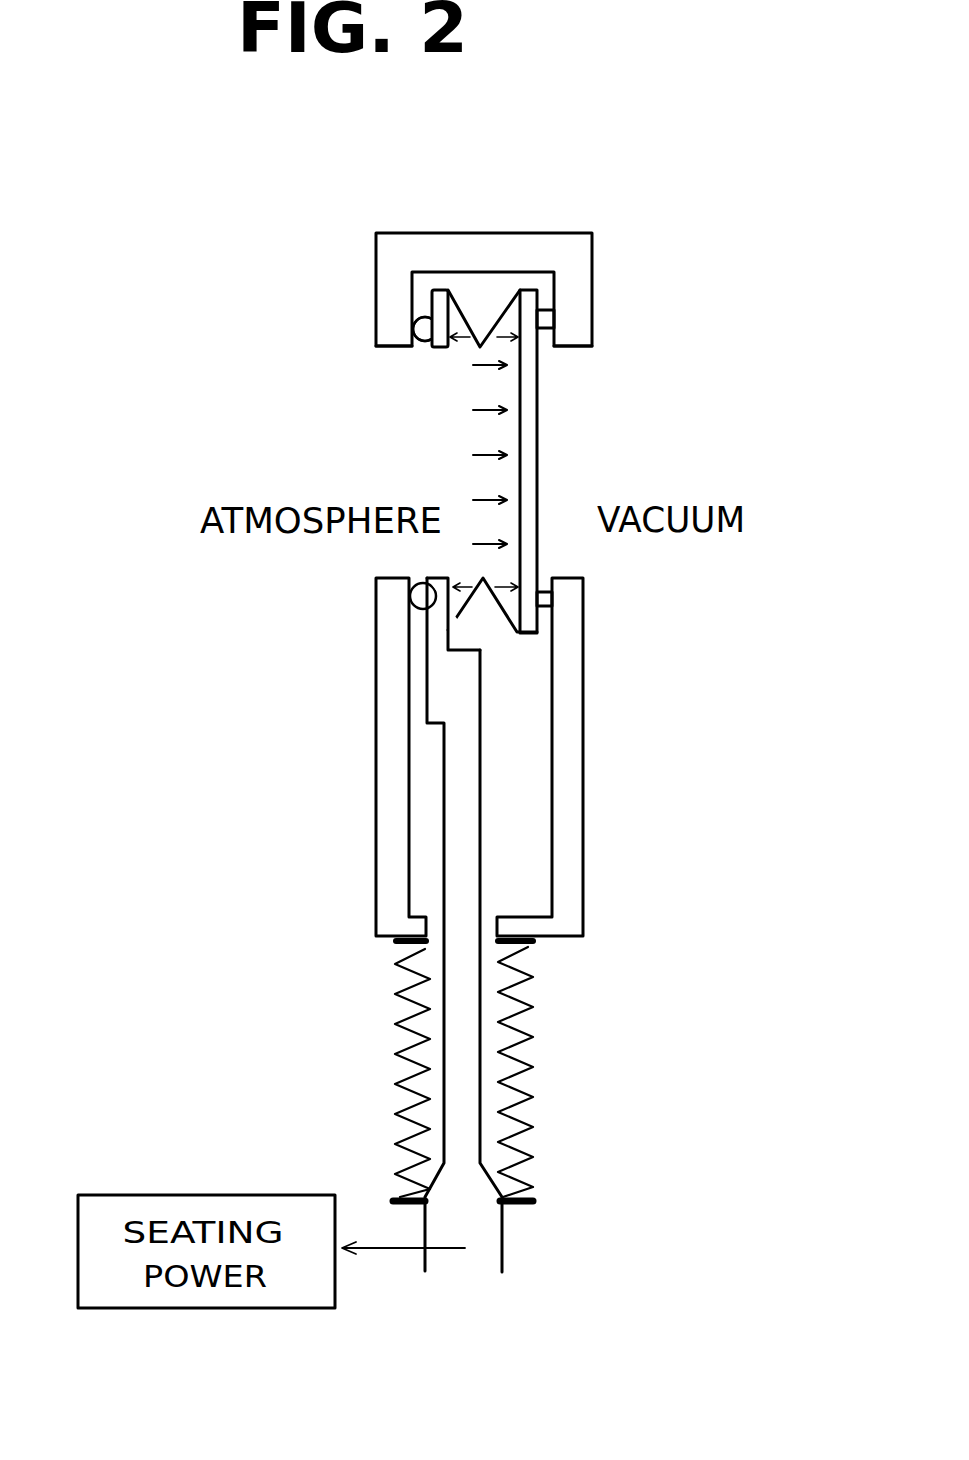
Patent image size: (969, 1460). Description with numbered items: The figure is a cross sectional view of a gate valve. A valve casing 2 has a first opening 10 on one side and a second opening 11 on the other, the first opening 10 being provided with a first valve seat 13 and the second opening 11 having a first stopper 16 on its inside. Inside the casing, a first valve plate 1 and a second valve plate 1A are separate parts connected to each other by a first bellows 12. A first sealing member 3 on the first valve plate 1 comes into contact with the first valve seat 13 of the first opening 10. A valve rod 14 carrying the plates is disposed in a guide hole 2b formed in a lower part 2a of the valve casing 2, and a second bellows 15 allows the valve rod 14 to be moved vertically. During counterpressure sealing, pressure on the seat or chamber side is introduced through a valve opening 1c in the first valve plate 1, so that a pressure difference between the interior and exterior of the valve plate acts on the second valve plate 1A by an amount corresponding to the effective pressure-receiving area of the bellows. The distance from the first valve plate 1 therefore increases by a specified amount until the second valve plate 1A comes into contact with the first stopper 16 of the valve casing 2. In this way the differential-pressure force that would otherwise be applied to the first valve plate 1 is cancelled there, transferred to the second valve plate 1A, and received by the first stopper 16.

The first valve plate 1 is at (437, 348).
The second valve plate 1A is at (528, 460).
The valve opening 1c is at (433, 580).
The valve casing 2 is at (572, 262).
The lower part of the valve casing 2a is at (550, 928).
The guide hole 2b is at (408, 950).
The first sealing member 3 is at (425, 330).
The first opening 10 is at (393, 348).
The second opening 11 is at (577, 350).
The first bellows 12 is at (461, 313).
The first valve seat 13 is at (412, 325).
The valve rod 14 is at (463, 830).
The second bellows 15 is at (517, 1060).
The first stopper 16 is at (542, 332).